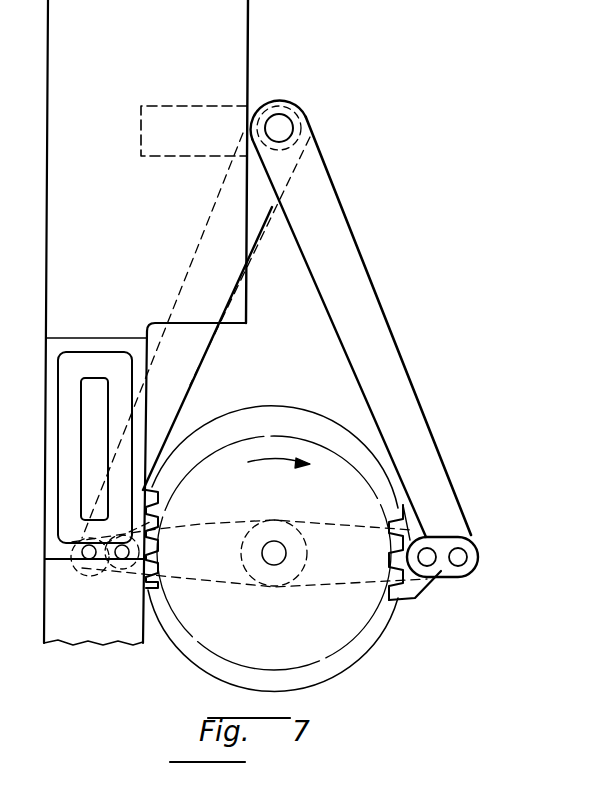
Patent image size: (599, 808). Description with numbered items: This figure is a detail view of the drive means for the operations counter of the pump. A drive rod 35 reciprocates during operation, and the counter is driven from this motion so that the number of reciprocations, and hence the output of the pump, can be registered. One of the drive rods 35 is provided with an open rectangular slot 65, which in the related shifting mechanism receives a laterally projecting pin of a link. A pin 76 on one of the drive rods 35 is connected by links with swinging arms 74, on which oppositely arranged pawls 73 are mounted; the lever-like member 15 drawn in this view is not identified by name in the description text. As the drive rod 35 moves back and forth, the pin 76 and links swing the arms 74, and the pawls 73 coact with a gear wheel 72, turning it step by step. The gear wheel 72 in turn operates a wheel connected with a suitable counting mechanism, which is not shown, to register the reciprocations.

The drive rod 35 is at (240, 29).
The pin 76 is at (284, 125).
The lever arm 15 is at (398, 360).
The open rectangular slot 65 is at (92, 356).
The pawl 73 is at (160, 520).
The swinging arm 74 is at (453, 543).
The gear wheel 72 is at (395, 606).